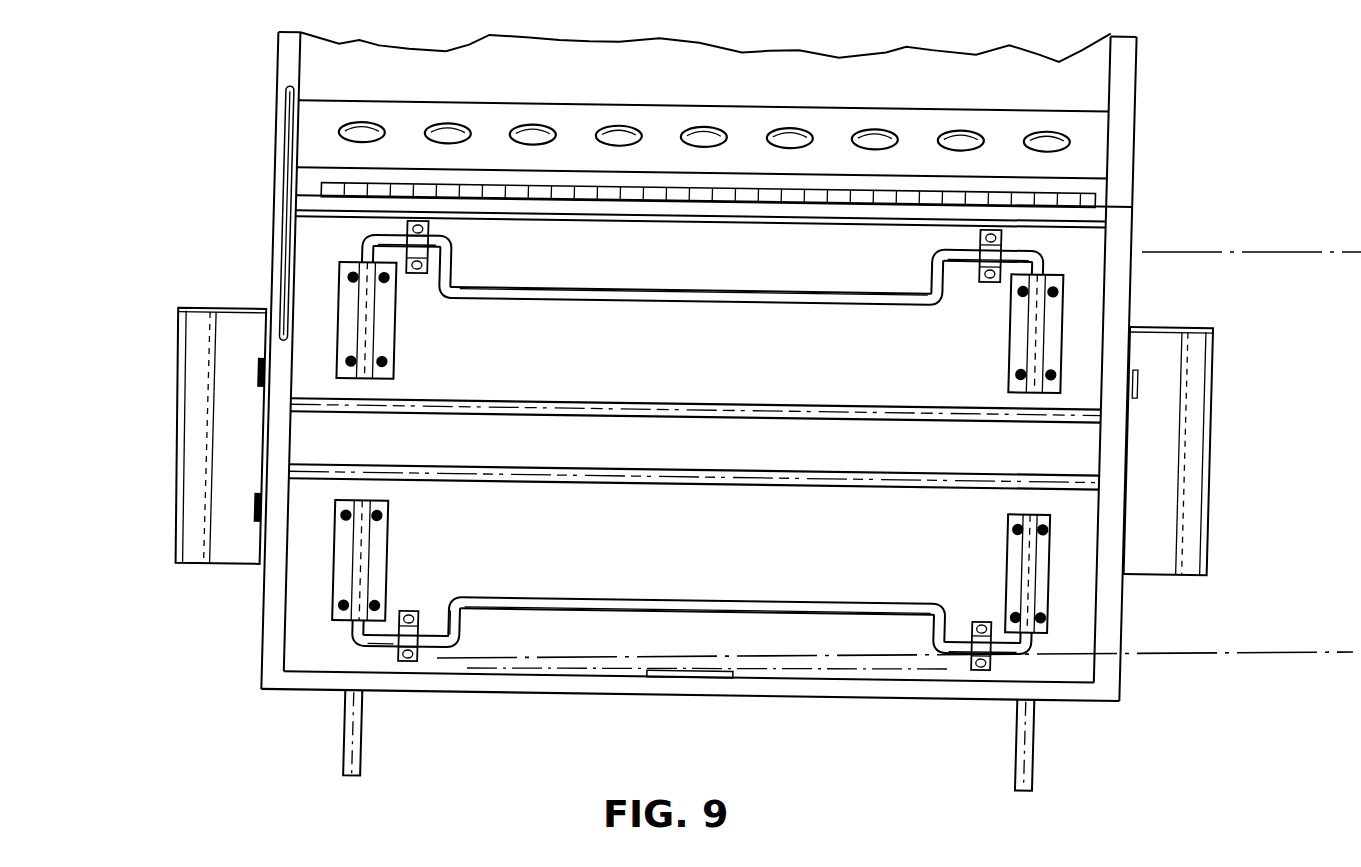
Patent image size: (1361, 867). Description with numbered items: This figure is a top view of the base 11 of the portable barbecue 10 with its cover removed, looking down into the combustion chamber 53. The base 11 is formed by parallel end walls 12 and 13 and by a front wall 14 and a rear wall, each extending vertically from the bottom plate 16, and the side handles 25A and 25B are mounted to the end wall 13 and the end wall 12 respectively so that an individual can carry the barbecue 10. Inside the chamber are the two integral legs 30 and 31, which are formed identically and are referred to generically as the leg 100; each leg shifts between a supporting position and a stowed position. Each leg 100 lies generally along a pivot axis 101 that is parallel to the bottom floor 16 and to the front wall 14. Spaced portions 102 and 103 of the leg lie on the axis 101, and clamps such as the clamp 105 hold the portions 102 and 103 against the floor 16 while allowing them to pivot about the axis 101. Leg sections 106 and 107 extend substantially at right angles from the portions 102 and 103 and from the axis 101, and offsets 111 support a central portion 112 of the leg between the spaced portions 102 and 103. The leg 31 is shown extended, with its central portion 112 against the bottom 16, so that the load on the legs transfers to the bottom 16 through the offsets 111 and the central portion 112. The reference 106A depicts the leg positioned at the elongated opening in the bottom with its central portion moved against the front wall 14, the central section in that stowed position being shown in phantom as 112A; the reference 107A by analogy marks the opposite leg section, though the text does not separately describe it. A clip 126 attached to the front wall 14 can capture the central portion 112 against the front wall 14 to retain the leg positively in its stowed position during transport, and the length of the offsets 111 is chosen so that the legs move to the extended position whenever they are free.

The portable barbecue 10 is at (1162, 158).
The base 11 is at (850, 697).
The end wall 12 is at (1133, 292).
The end wall 13 is at (262, 643).
The front wall 14 is at (560, 690).
The bottom plate 16 is at (553, 553).
The side handle 25A is at (176, 413).
The side handle 25B is at (1211, 428).
The leg 30 is at (350, 235).
The leg 31 is at (692, 637).
The combustion chamber 53 is at (712, 369).
The leg 100 is at (837, 598).
The pivot axis 101 is at (1300, 250).
The spaced portion 102 is at (385, 643).
The spaced portion 103 is at (947, 650).
The clamp 105 is at (418, 610).
The leg section 106 is at (345, 757).
The stowed leg 106A is at (362, 556).
The leg section 107 is at (1040, 779).
The right mounting bracket 107A is at (1040, 590).
The offsets 111 is at (453, 624).
The central portion 112 is at (729, 599).
The central section against front wall 112A is at (622, 670).
The clip 126 is at (697, 678).